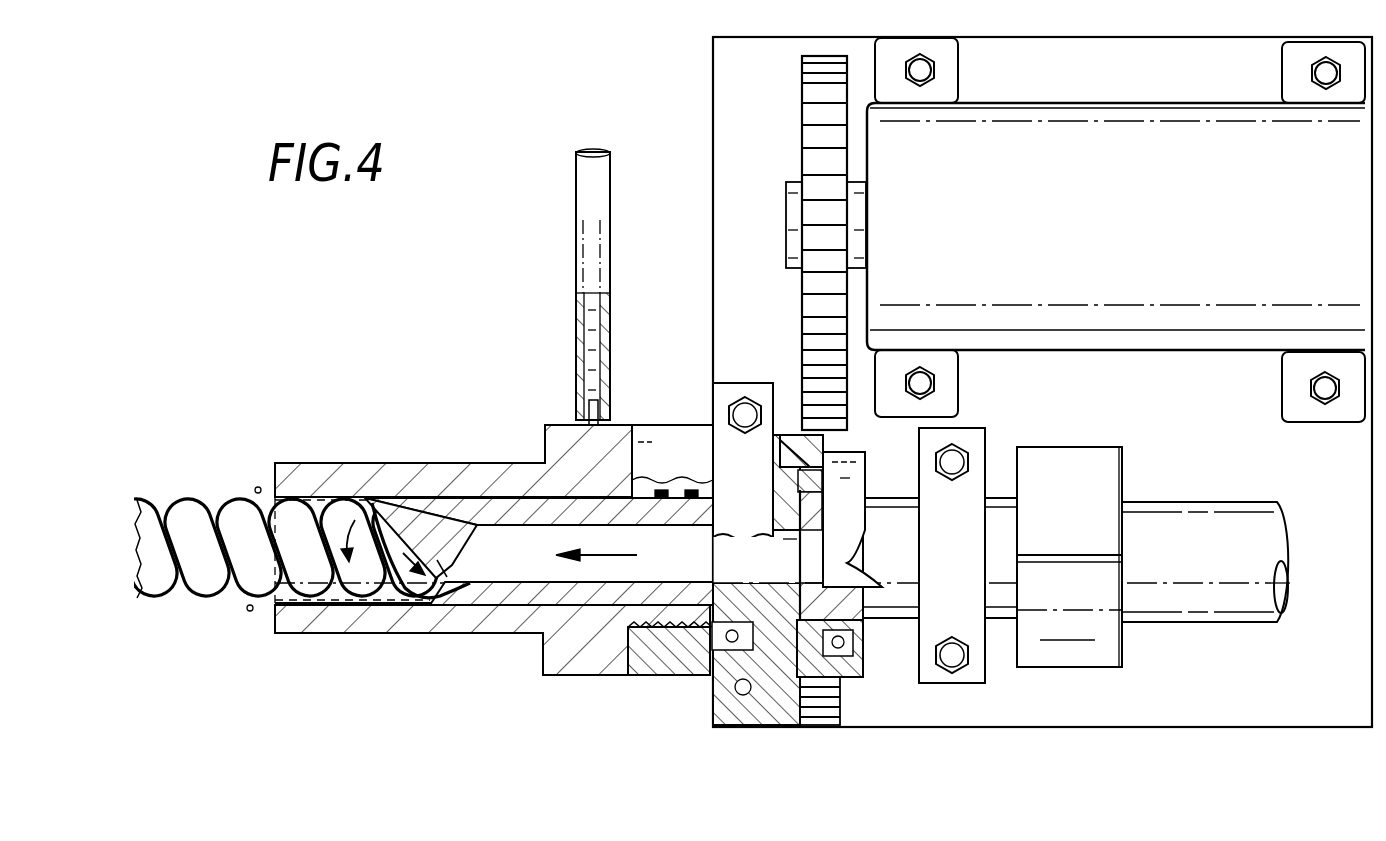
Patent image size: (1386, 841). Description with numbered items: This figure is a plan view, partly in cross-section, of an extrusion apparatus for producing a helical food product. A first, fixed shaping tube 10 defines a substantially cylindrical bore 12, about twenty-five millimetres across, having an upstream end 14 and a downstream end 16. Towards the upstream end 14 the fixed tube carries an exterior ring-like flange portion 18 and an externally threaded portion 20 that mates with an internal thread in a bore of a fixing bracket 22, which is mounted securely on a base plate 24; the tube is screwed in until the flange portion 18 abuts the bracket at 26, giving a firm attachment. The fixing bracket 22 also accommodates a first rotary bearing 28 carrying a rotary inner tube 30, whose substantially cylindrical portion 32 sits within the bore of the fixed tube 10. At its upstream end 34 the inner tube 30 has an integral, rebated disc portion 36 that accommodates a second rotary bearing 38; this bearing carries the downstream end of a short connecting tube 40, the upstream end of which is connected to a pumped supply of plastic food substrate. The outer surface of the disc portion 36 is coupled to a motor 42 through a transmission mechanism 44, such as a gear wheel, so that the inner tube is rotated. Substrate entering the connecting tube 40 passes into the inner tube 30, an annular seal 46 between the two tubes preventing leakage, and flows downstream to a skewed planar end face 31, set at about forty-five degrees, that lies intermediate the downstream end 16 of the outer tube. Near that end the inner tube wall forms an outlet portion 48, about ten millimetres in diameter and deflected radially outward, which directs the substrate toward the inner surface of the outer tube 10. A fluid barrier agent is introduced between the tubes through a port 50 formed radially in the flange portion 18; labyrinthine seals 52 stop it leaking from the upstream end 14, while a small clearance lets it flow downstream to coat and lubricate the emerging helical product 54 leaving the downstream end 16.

The fixed shaping tube 10 is at (417, 623).
The cylindrical bore 12 is at (370, 603).
The upstream end 14 is at (703, 605).
The downstream end 16 is at (272, 600).
The flange portion 18 is at (608, 665).
The externally threaded portion 20 is at (653, 627).
The fixing bracket 22 is at (740, 387).
The base plate 24 is at (748, 121).
The abutment 26 is at (640, 457).
The first rotary bearing 28 is at (728, 613).
The rotary inner tube 30 is at (597, 597).
The planar end face 31 is at (370, 500).
The cylindrical portion 32 is at (505, 497).
The upstream end 34 is at (863, 670).
The disc portion 36 is at (790, 438).
The second rotary bearing 38 is at (870, 593).
The connecting tube 40 is at (1000, 597).
The motor 42 is at (1128, 230).
The transmission mechanism 44 is at (815, 283).
The annular seal 46 is at (800, 627).
The outlet portion 48 is at (468, 583).
The port 50 is at (580, 397).
The labyrinthine seals 52 is at (690, 490).
The helical product 54 is at (210, 587).